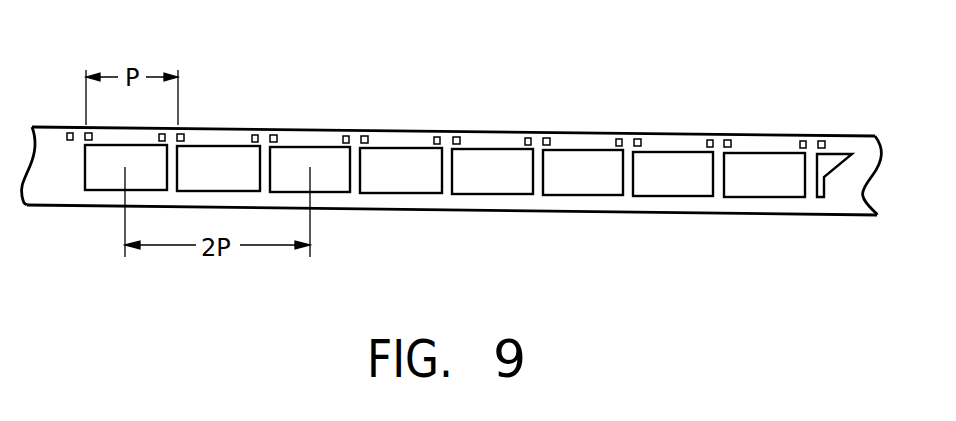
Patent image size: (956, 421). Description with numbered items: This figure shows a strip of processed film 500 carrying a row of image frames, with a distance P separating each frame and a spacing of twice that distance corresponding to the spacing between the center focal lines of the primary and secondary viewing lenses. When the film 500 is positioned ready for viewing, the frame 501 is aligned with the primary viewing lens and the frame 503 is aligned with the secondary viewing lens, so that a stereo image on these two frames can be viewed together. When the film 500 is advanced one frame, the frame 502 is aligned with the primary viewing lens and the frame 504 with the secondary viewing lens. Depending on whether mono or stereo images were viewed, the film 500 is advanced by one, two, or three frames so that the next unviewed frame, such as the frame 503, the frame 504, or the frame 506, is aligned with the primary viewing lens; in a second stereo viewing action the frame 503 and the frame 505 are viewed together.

The film 500 is at (368, 65).
The frame 501 is at (107, 182).
The frame 502 is at (200, 153).
The frame 503 is at (328, 176).
The frame 504 is at (385, 157).
The frame 505 is at (485, 185).
The frame 506 is at (565, 157).